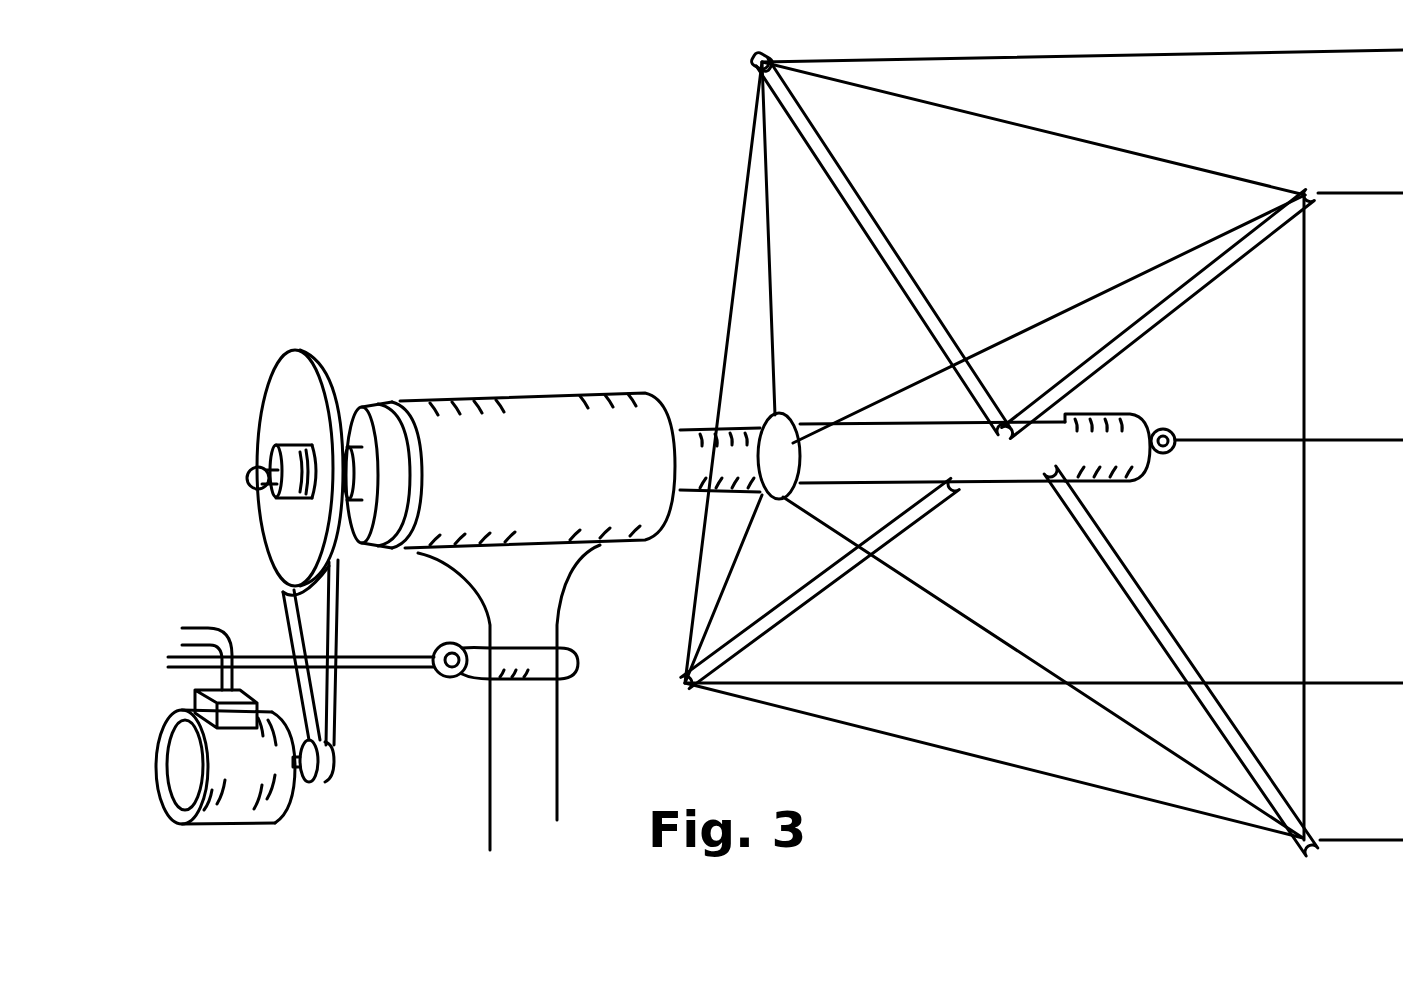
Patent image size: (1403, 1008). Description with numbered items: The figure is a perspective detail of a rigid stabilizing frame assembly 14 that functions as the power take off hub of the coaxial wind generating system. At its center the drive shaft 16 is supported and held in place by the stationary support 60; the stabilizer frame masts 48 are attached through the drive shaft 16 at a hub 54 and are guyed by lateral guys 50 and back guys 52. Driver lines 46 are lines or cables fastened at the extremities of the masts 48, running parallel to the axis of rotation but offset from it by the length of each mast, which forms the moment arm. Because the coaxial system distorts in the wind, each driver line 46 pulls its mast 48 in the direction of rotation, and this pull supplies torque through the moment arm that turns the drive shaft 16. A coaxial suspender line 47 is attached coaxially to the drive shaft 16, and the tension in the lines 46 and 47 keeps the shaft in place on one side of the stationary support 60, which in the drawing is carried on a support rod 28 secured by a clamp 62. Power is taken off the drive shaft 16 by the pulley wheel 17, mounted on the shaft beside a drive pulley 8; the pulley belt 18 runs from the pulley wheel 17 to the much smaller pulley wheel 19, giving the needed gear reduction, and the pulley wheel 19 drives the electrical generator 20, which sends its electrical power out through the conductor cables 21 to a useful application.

The drive pulley 8 is at (380, 404).
The frame assembly 14 is at (740, 81).
The drive shaft 16 is at (1010, 482).
The pulley wheel 17 is at (330, 368).
The pulley belt 18 is at (283, 603).
The pulley wheel 19 is at (332, 762).
The electrical generator 20 is at (278, 697).
The conductor cables 21 is at (193, 625).
The support rod 28 is at (340, 660).
The driver lines 46 is at (1105, 57).
The coaxial suspender line 47 is at (1213, 441).
The stabilizer frame masts 48 is at (850, 160).
The lateral guys 50 is at (733, 285).
The back guys 52 is at (782, 328).
The hub 54 is at (795, 418).
The stationary support 60 is at (540, 393).
The clamp 62 is at (470, 678).